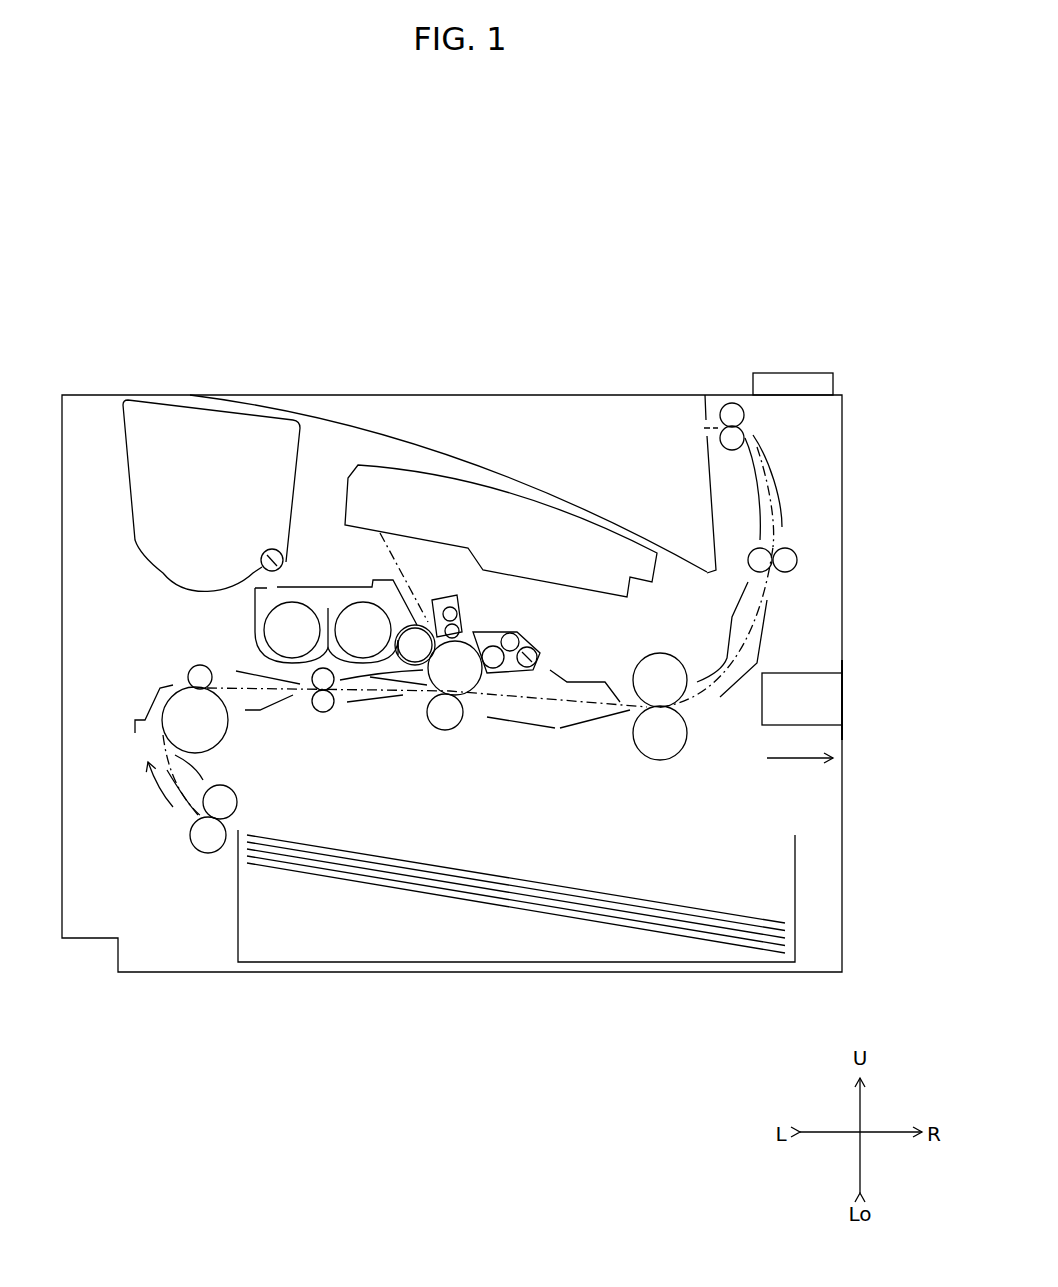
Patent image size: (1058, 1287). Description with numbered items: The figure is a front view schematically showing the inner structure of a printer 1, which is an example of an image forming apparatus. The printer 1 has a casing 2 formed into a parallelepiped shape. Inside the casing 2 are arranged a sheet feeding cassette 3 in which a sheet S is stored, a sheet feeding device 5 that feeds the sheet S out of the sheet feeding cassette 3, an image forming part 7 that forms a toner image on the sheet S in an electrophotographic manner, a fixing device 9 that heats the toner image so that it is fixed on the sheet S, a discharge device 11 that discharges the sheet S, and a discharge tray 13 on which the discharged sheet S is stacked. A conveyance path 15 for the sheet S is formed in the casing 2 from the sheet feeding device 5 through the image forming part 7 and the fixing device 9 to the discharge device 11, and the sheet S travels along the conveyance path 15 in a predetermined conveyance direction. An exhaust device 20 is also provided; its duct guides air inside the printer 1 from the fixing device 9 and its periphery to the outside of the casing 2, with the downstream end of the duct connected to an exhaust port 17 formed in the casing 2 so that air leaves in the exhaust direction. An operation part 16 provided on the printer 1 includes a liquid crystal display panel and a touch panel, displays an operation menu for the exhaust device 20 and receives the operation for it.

The printer 1 is at (405, 330).
The casing 2 is at (848, 418).
The sheet feeding cassette 3 is at (800, 870).
The sheet feeding device 5 is at (182, 833).
The image forming part 7 is at (492, 733).
The fixing device 9 is at (630, 753).
The discharge device 11 is at (720, 405).
The discharge tray 13 is at (548, 480).
The conveyance path 15 is at (230, 687).
The operation part 16 is at (787, 373).
The exhaust port 17 is at (842, 690).
The exhaust device 20 is at (820, 660).
The sheet S is at (517, 877).